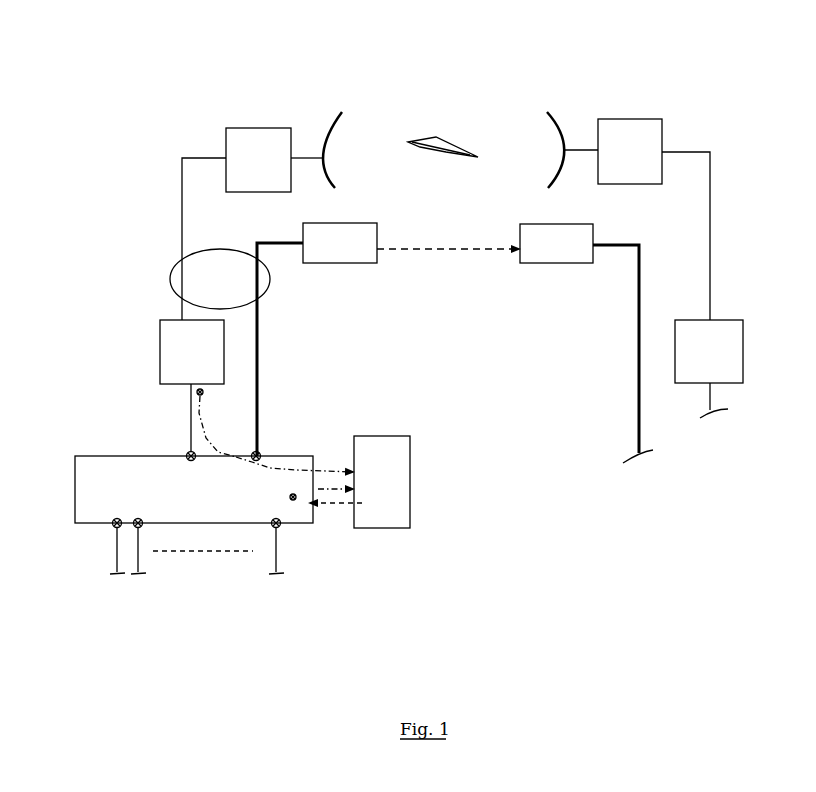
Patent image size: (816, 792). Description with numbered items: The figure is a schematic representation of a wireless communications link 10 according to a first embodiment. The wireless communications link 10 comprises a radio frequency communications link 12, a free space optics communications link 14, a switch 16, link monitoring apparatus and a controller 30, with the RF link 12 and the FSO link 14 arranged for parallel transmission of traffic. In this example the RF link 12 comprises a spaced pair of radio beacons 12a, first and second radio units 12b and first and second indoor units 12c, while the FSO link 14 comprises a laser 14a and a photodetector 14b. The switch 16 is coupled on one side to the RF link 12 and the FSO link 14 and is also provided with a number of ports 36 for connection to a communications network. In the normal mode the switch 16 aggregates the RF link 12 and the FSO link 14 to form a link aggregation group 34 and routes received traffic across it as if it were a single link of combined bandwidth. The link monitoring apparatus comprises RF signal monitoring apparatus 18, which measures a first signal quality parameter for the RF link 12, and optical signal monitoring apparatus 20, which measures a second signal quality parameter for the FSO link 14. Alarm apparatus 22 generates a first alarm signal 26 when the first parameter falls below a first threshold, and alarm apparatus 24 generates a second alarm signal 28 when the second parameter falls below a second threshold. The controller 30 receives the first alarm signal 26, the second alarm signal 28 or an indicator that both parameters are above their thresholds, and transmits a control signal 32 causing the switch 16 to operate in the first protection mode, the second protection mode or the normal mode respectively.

The wireless communications link 10 is at (565, 535).
The radio frequency communications link 12 is at (503, 80).
The radio beacons 12a is at (337, 118).
The radio units 12b is at (243, 138).
The indoor units 12c is at (727, 330).
The free space optics communications link 14 is at (465, 287).
The laser 14a is at (340, 265).
The photodetector 14b is at (557, 265).
The switch 16 is at (85, 525).
The RF signal monitoring apparatus 18 is at (168, 333).
The optical signal monitoring apparatus 20 is at (274, 466).
The alarm apparatus 22 is at (203, 372).
The alarm apparatus 24 is at (294, 502).
The first alarm signal 26 is at (204, 429).
The second alarm signal 28 is at (323, 488).
The controller 30 is at (400, 466).
The control signal 32 is at (333, 505).
The link aggregation group 34 is at (175, 268).
The ports 36 is at (140, 560).